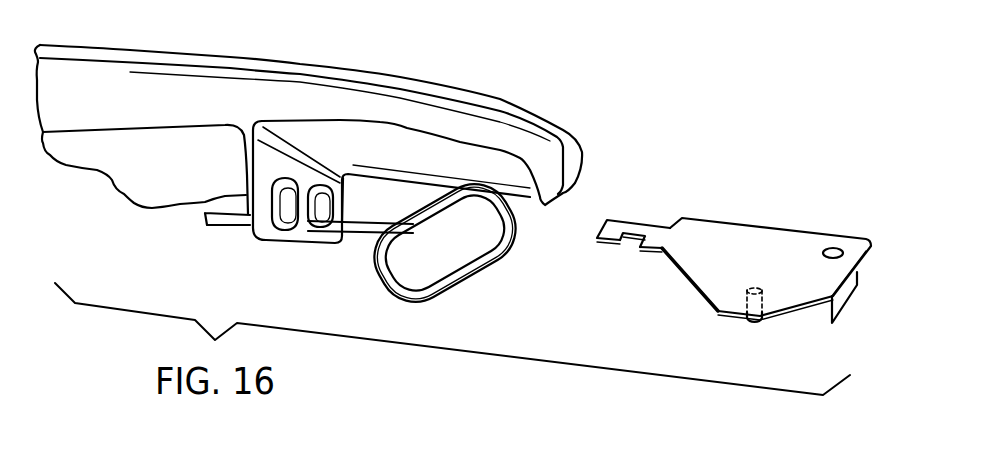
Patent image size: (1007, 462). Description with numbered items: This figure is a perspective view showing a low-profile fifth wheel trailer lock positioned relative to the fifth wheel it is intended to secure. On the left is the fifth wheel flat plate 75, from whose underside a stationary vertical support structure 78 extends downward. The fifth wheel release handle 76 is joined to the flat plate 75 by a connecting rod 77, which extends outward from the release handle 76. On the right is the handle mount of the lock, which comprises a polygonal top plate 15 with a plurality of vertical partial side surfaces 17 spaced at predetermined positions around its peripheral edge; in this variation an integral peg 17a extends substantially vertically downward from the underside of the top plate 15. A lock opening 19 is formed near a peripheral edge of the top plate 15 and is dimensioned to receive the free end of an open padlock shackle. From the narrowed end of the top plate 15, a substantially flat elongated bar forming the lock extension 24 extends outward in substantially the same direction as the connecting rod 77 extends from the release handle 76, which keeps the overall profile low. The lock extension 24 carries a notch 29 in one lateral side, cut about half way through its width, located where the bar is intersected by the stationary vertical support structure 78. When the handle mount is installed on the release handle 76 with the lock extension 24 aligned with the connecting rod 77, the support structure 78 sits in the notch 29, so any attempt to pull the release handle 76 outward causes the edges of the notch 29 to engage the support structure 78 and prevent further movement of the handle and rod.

The fifth wheel flat plate 75 is at (452, 85).
The stationary vertical support structure 78 is at (300, 232).
The connecting rod 77 is at (372, 232).
The release handle 76 is at (487, 257).
The top plate 15 is at (747, 238).
The lock extension 24 is at (648, 224).
The notch 29 is at (630, 238).
The lock opening 19 is at (835, 248).
The vertical partial side surfaces 17 is at (845, 300).
The integral peg 17a is at (747, 320).